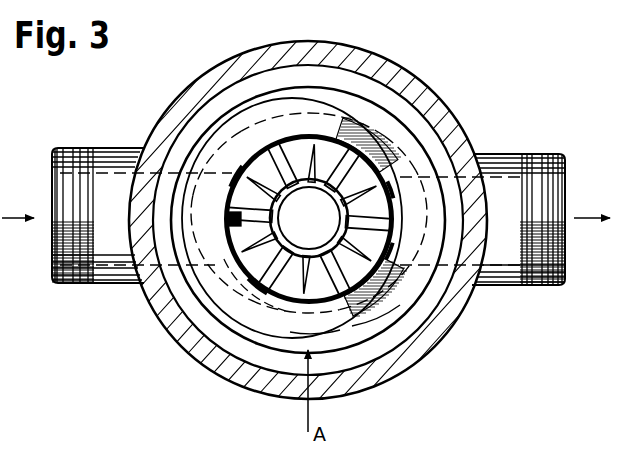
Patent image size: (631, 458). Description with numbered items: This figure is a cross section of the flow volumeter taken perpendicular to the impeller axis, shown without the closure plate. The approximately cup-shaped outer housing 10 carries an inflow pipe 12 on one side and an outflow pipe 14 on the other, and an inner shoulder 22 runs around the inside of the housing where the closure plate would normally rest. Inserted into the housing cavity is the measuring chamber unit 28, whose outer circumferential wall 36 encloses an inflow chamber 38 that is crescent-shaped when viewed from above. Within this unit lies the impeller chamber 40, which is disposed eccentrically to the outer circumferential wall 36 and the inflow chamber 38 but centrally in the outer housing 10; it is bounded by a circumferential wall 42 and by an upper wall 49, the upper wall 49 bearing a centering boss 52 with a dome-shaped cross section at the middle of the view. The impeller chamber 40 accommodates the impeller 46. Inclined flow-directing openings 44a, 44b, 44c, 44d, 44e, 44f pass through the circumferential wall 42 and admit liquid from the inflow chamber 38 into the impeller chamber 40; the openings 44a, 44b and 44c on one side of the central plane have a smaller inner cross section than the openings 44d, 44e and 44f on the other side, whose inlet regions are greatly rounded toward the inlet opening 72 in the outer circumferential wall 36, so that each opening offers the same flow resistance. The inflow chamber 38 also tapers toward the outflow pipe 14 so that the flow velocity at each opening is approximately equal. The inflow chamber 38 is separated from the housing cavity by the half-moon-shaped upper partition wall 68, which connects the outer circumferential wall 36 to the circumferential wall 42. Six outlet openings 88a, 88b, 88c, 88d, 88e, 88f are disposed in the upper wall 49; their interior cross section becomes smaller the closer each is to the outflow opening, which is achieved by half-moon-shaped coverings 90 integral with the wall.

The outer housing 10 is at (318, 208).
The inflow pipe 12 is at (112, 272).
The outflow pipe 14 is at (512, 160).
The inner shoulder 22 is at (187, 138).
The measuring chamber unit 28 is at (382, 315).
The outer circumferential wall 36 is at (253, 291).
The inflow chamber 38 is at (242, 160).
The impeller chamber 40 is at (372, 193).
The circumferential wall 42 is at (385, 258).
The flow-directing opening 44a is at (190, 313).
The flow-directing opening 44b is at (293, 311).
The flow-directing opening 44c is at (400, 340).
The flow-directing opening 44d is at (186, 135).
The flow-directing opening 44e is at (285, 130).
The flow-directing opening 44f is at (357, 130).
The impeller 46 is at (330, 336).
The upper wall 49 is at (387, 140).
The centering boss 52 is at (320, 226).
The upper partition wall 68 is at (205, 300).
The inlet opening 72 is at (165, 285).
The outlet opening 88a is at (263, 280).
The outlet opening 88b is at (352, 312).
The outlet opening 88c is at (388, 268).
The outlet opening 88d is at (233, 192).
The outlet opening 88e is at (303, 130).
The outlet opening 88f is at (394, 175).
The half-moon-shaped covering 90 is at (393, 232).